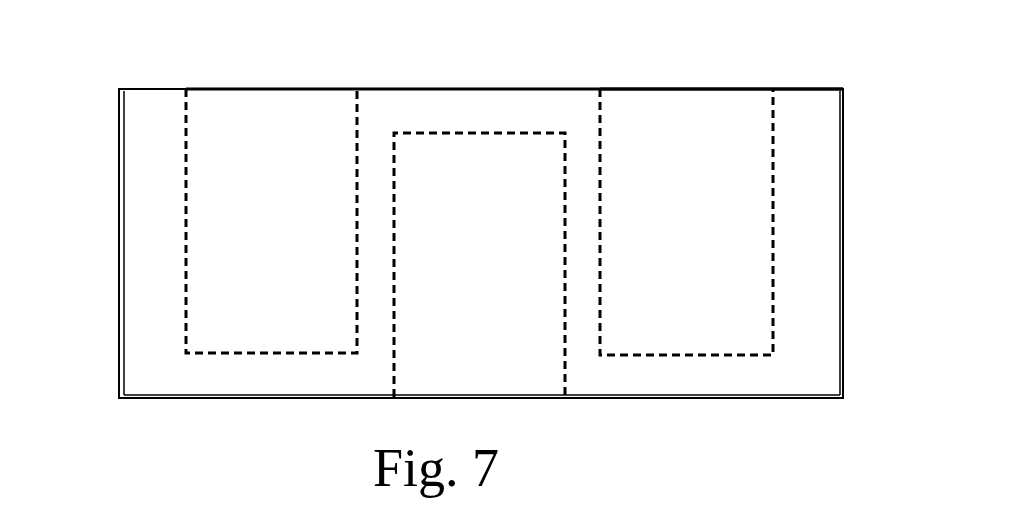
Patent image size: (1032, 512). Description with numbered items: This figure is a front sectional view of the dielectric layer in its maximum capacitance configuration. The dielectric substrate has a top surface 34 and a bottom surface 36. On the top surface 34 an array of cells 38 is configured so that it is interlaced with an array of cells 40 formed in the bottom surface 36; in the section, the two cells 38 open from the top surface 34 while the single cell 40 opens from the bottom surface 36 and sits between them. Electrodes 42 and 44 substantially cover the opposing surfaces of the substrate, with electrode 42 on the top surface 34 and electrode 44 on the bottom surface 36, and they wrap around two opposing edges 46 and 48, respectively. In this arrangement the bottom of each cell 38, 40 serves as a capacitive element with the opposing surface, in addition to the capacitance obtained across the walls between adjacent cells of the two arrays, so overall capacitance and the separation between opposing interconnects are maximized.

The top surface 34 is at (152, 89).
The bottom surface 36 is at (805, 398).
The array of cells 38 is at (753, 315).
The array of cells 40 is at (546, 368).
The electrode 42 is at (805, 89).
The electrode 44 is at (151, 399).
The edge 46 is at (843, 164).
The edge 48 is at (121, 233).